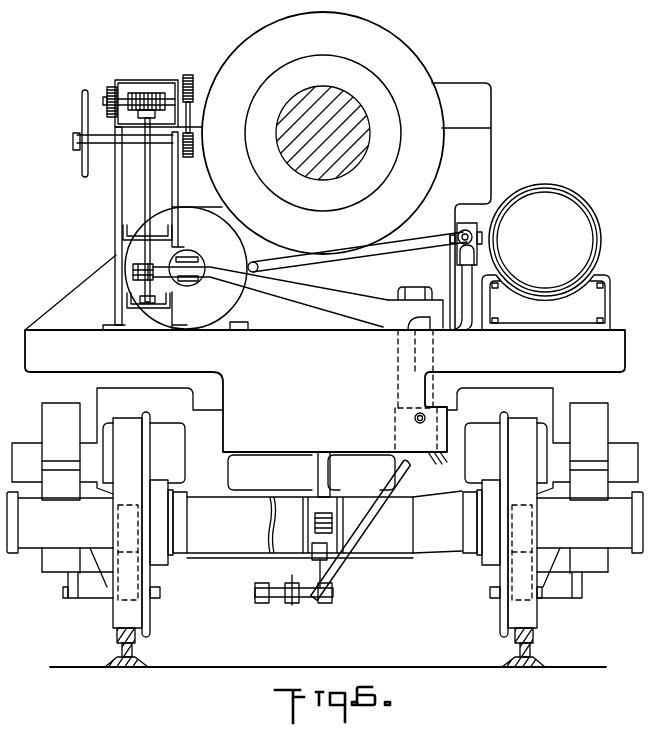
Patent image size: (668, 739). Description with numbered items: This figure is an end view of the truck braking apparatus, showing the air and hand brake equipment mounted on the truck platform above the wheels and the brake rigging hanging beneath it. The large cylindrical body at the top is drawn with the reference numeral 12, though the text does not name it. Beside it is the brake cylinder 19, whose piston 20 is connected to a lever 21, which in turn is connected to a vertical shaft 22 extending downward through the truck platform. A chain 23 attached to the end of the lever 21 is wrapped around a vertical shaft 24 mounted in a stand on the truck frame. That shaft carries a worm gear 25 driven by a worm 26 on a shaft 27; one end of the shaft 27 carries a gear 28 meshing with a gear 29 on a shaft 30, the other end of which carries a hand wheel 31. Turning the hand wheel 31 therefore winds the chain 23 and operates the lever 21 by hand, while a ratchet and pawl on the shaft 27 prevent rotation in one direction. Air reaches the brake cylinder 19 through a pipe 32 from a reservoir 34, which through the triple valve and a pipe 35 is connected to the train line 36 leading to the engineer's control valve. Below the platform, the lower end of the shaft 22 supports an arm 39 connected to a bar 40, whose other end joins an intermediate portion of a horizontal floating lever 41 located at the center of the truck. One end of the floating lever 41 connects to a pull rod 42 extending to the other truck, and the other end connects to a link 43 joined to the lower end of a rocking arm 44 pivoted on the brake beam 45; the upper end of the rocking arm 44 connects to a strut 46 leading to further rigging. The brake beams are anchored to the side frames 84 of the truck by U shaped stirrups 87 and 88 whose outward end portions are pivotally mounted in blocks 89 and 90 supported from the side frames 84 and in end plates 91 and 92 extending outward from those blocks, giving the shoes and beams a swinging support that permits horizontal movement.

The motor 12 is at (370, 115).
The brake cylinder 19 is at (186, 268).
The piston 20 is at (200, 259).
The lever 21 is at (343, 297).
The vertical shaft 22 is at (413, 290).
The chain 23 is at (133, 272).
The vertical shaft 24 is at (145, 191).
The worm gear 25 is at (130, 90).
The worm 26 is at (158, 93).
The shaft 27 is at (187, 87).
The gear 28 is at (195, 78).
The gear 29 is at (186, 158).
The shaft 30 is at (108, 143).
The hand wheel 31 is at (83, 100).
The pipe 32 is at (420, 240).
The reservoir 34 is at (560, 199).
The pipe 35 is at (472, 300).
The train line 36 is at (414, 417).
The arm 39 is at (388, 515).
The bar 40 is at (292, 603).
The floating lever 41 is at (280, 590).
The pull rod 42 is at (262, 586).
The link 43 is at (333, 596).
The rocking arm 44 is at (318, 535).
The brake beam 45 is at (392, 553).
The strut 46 is at (318, 500).
The side frame 84 is at (603, 422).
The U shaped stirrup 87 is at (110, 568).
The U shaped stirrup 88 is at (533, 600).
The block 89 is at (100, 598).
The block 90 is at (570, 590).
The end plate 91 is at (160, 592).
The end plate 92 is at (490, 592).